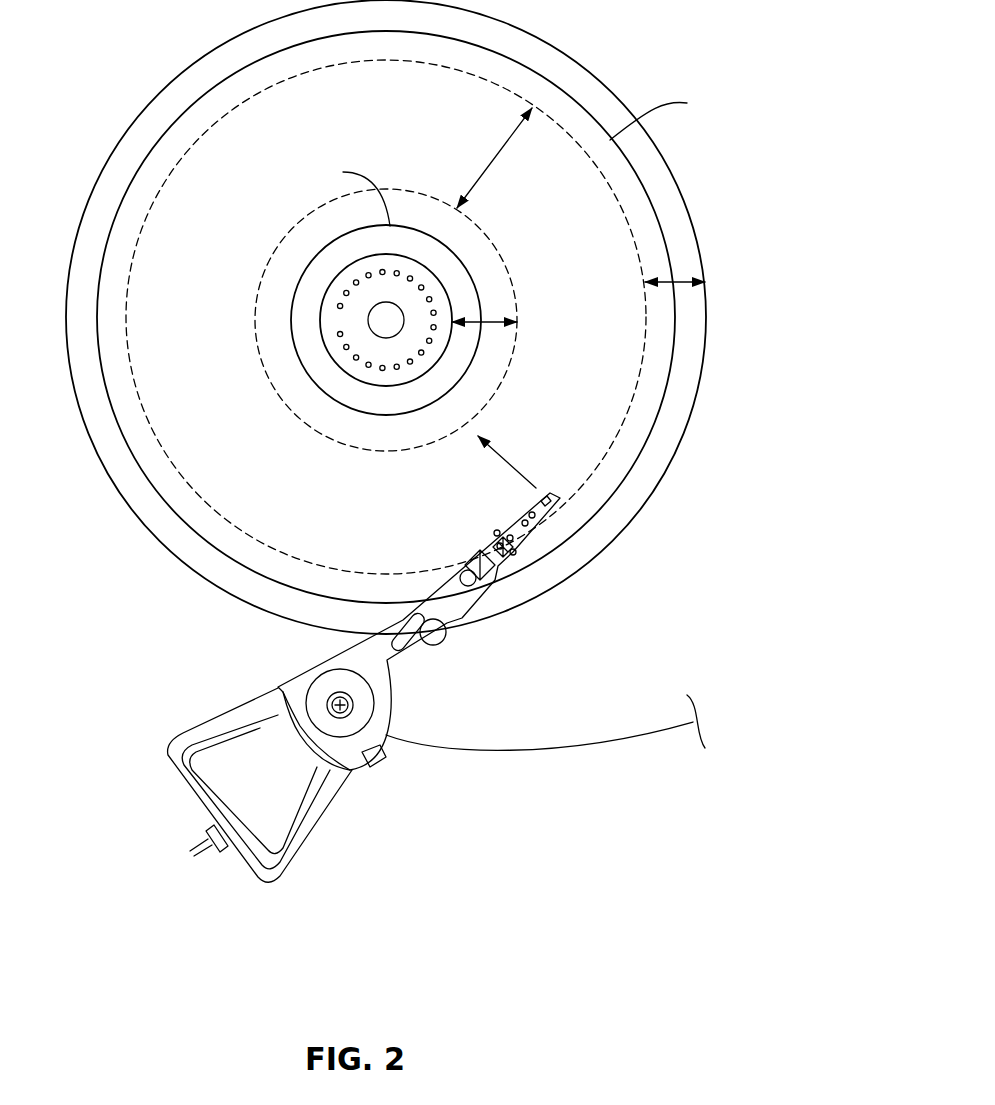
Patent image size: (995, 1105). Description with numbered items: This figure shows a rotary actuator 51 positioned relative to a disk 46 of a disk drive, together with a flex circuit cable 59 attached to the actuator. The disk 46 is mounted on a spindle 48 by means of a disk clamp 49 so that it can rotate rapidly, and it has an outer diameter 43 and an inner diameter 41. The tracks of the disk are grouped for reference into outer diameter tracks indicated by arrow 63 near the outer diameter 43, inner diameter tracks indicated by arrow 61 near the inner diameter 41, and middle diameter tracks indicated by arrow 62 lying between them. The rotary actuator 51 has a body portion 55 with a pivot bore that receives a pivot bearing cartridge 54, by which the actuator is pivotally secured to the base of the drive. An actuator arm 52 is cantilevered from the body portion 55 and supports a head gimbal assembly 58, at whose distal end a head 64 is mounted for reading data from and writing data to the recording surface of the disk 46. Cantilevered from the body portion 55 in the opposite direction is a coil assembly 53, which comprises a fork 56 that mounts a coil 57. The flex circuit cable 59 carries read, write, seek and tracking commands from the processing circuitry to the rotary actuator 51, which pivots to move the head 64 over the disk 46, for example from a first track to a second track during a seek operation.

The inner diameter 41 is at (465, 267).
The outer diameter 43 is at (668, 168).
The disk 46 is at (147, 502).
The spindle 48 is at (367, 320).
The disk clamp 49 is at (320, 328).
The rotary actuator 51 is at (440, 807).
The actuator arm 52 is at (403, 672).
The coil assembly 53 is at (219, 703).
The pivot bearing cartridge 54 is at (328, 695).
The body portion 55 is at (383, 752).
The fork 56 is at (322, 803).
The coil 57 is at (283, 860).
The head gimbal assembly 58 is at (535, 527).
The flex circuit cable 59 is at (573, 750).
The arrow indicating inner diameter tracks 61 is at (487, 322).
The arrow indicating middle diameter tracks 62 is at (487, 165).
The arrow indicating outer diameter tracks 63 is at (680, 283).
The head 64 is at (557, 495).